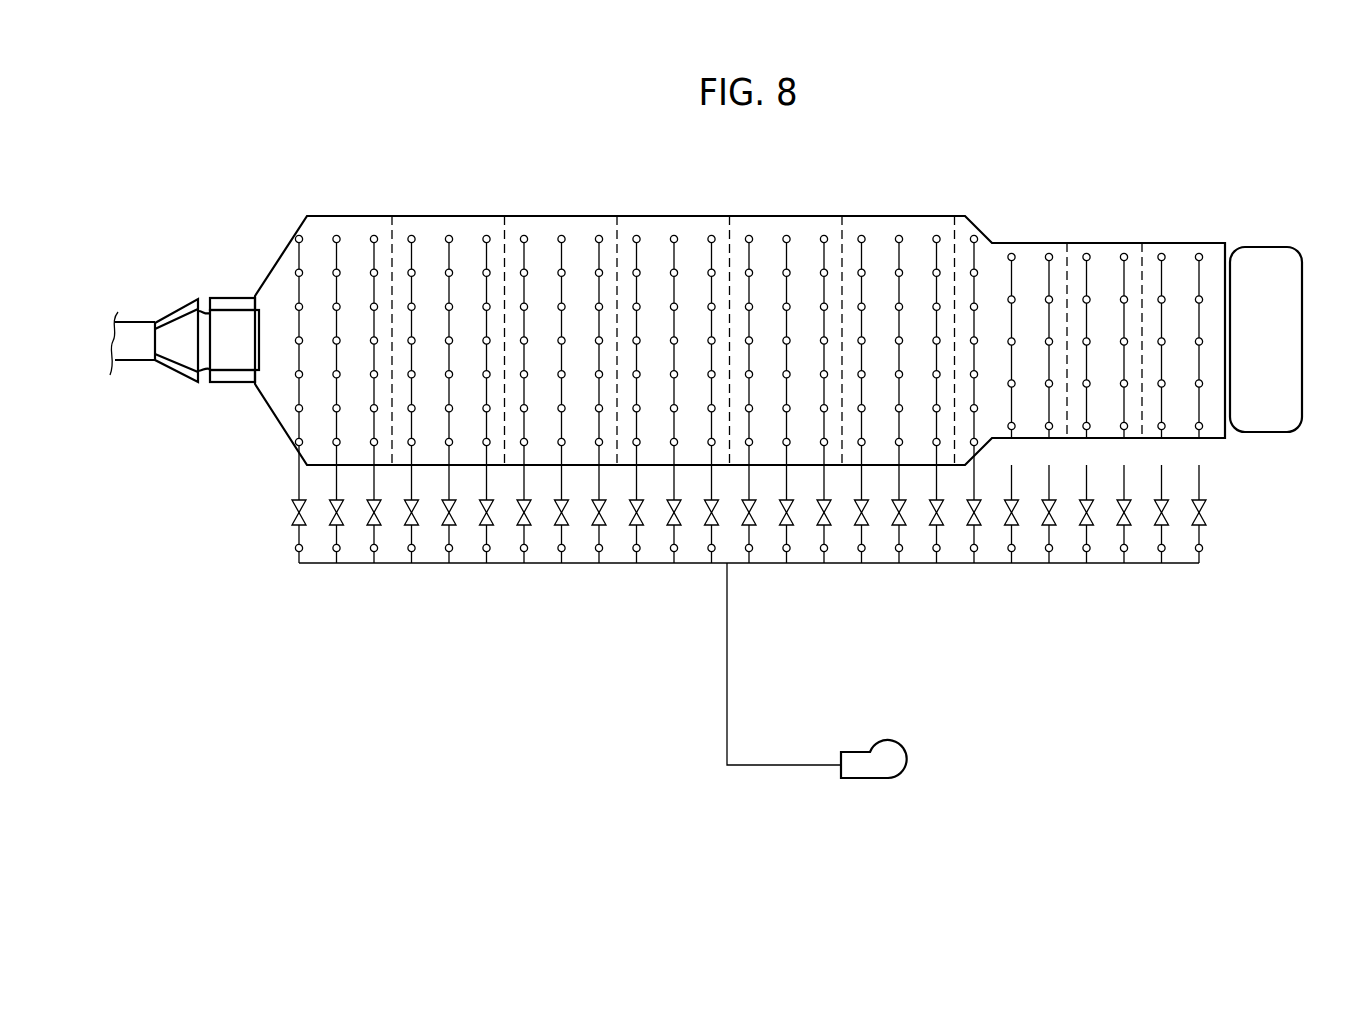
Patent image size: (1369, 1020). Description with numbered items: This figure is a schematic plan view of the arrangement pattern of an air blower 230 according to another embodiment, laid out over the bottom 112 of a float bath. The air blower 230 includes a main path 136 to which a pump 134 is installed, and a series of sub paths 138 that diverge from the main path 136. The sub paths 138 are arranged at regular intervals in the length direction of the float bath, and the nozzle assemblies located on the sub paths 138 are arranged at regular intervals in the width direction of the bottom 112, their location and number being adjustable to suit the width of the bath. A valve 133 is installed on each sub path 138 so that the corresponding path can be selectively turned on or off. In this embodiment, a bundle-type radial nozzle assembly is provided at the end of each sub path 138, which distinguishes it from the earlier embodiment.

The bottom 112 is at (694, 222).
The sub paths 138 is at (1199, 485).
The valve 133 is at (1206, 503).
The air blower 230 is at (447, 580).
The main path 136 is at (727, 718).
The pump 134 is at (867, 780).